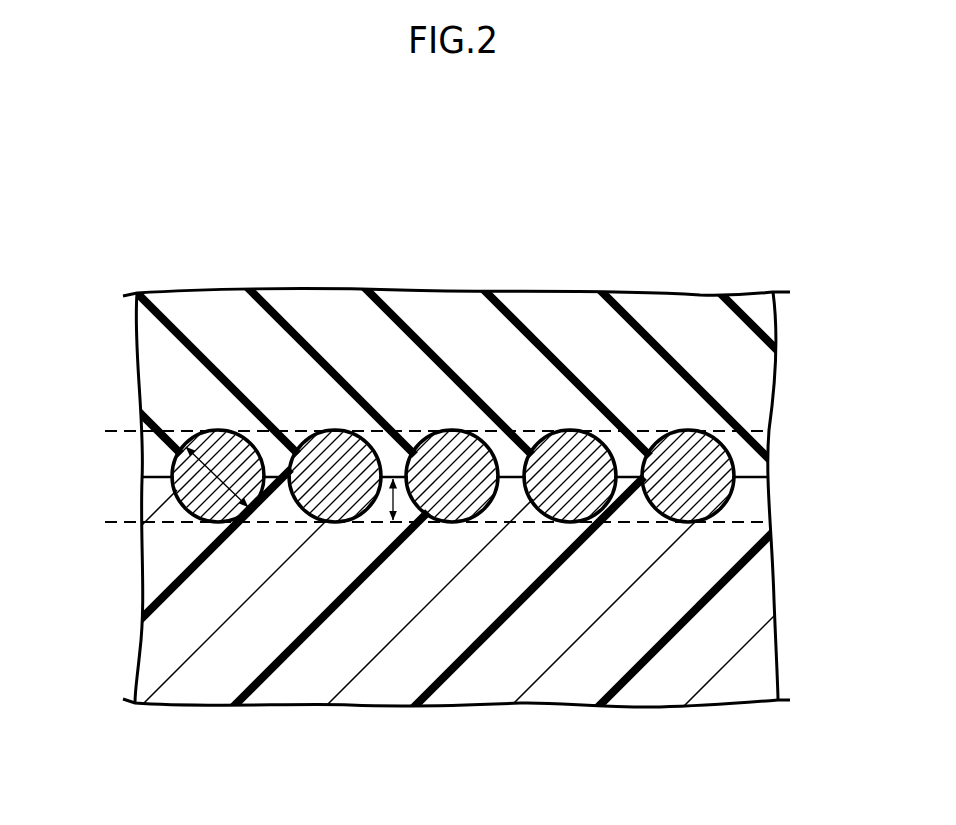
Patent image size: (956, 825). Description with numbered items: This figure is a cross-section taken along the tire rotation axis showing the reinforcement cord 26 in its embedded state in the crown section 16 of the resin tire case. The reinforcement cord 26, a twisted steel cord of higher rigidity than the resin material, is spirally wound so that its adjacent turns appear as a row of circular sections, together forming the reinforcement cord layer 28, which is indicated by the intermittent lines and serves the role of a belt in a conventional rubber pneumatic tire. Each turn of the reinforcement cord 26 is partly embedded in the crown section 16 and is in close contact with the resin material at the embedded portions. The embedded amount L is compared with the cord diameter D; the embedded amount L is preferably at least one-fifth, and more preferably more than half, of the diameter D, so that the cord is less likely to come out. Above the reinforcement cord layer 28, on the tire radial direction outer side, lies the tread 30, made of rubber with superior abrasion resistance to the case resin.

The crown section 16 is at (560, 688).
The reinforcement cord 26 is at (197, 432).
The reinforcement cord layer 28 is at (410, 428).
The tread 30 is at (662, 305).
The diameter of the reinforcement cord D is at (195, 490).
The embedded amount L is at (392, 500).